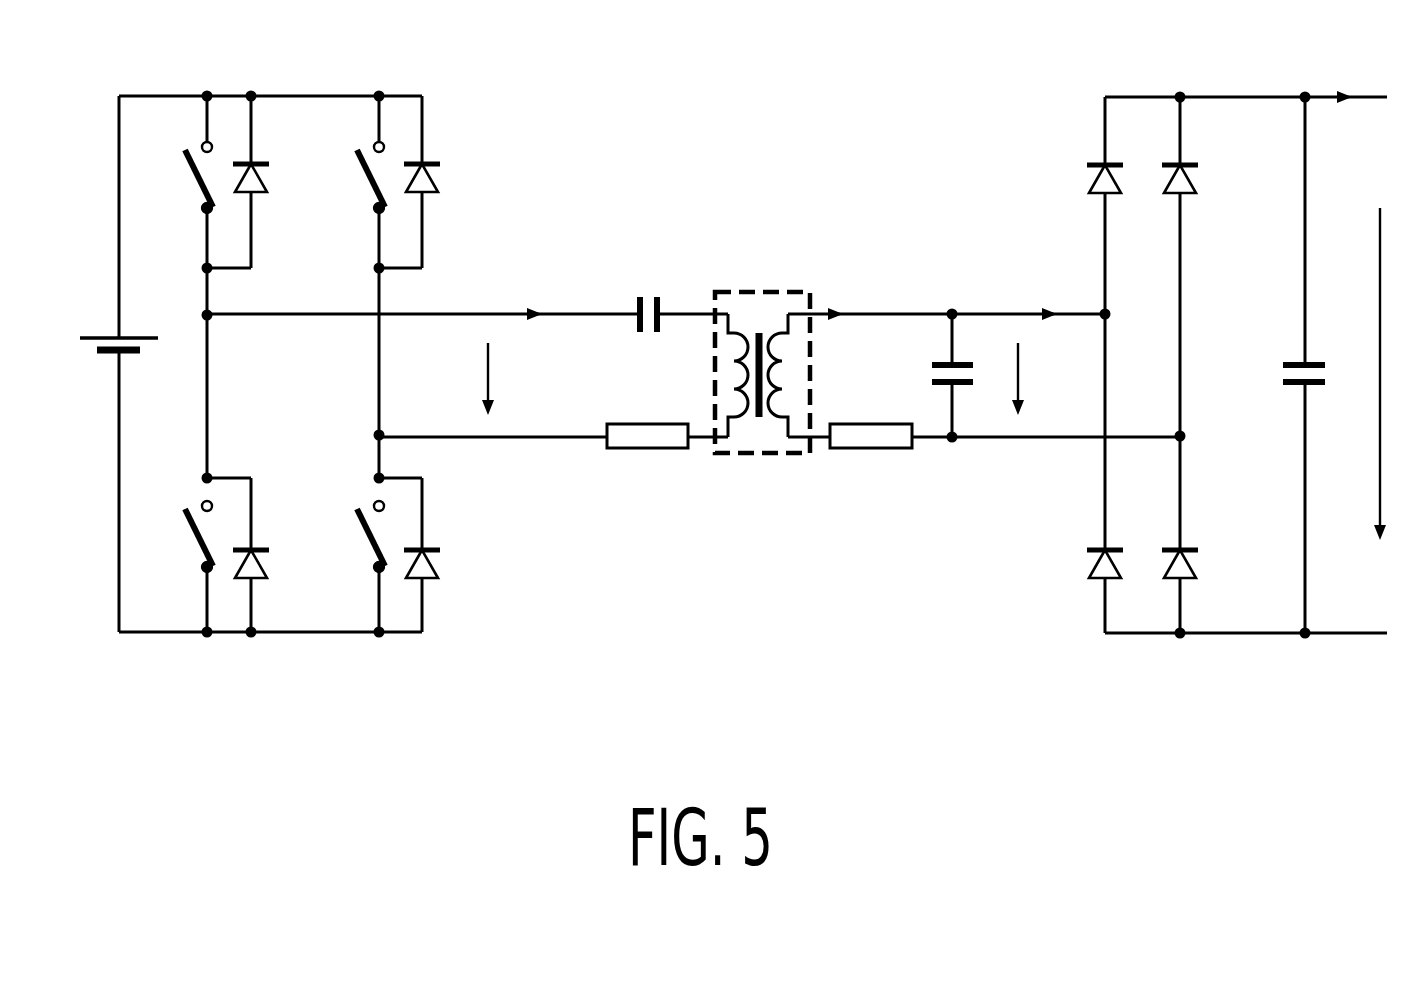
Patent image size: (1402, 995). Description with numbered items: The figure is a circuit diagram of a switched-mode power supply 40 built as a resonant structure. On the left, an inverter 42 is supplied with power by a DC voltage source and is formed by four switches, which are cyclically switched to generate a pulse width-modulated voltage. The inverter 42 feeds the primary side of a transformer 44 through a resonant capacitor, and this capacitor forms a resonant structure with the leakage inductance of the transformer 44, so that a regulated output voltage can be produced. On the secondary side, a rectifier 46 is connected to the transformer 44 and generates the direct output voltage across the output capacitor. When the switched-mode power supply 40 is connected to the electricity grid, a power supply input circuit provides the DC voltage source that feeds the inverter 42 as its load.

The switched-mode power supply 40 is at (834, 123).
The inverter 42 is at (432, 648).
The transformer 44 is at (772, 302).
The rectifier 46 is at (1210, 648).